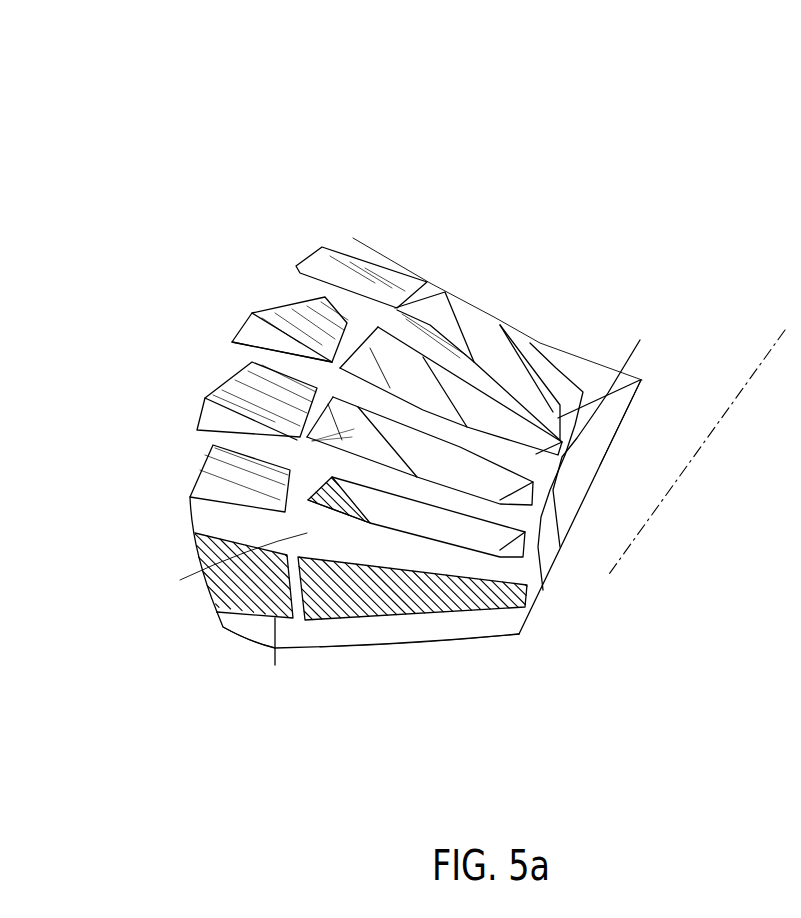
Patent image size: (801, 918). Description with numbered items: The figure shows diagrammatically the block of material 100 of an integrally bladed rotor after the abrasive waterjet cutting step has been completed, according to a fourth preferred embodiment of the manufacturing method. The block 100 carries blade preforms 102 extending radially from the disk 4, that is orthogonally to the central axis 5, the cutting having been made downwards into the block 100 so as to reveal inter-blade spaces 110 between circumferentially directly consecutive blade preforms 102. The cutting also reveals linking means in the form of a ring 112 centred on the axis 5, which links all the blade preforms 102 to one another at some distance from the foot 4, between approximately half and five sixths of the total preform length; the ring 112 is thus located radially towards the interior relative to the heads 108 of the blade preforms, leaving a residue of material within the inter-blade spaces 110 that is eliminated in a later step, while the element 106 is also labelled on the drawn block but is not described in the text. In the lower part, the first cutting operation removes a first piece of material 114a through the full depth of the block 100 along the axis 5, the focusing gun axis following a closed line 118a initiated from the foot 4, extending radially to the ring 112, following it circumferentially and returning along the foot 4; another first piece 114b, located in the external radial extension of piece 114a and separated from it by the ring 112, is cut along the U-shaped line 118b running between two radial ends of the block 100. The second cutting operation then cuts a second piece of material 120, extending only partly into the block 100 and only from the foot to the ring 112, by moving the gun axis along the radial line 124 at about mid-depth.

The block of material 100 is at (580, 195).
The blade preforms 102 is at (232, 441).
The rear surface 106 is at (585, 392).
The heads of the blade preforms 108 is at (323, 247).
The inter-blade spaces 110 is at (492, 348).
The ring 112 is at (353, 338).
The second piece of material 120 is at (180, 580).
The radial line 124 is at (205, 558).
The first piece of material 114a is at (527, 612).
The first piece of material 114b is at (215, 615).
The closed line 118a is at (380, 623).
The line 118b is at (275, 665).
The disk 4 is at (620, 417).
The central axis 5 is at (767, 357).